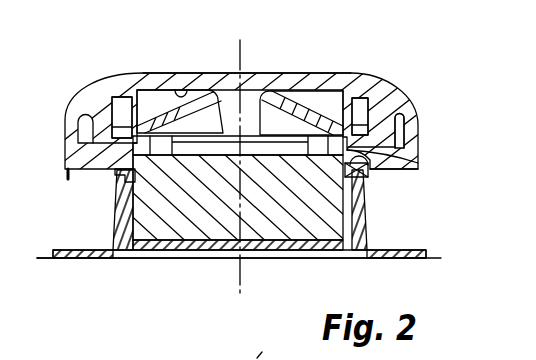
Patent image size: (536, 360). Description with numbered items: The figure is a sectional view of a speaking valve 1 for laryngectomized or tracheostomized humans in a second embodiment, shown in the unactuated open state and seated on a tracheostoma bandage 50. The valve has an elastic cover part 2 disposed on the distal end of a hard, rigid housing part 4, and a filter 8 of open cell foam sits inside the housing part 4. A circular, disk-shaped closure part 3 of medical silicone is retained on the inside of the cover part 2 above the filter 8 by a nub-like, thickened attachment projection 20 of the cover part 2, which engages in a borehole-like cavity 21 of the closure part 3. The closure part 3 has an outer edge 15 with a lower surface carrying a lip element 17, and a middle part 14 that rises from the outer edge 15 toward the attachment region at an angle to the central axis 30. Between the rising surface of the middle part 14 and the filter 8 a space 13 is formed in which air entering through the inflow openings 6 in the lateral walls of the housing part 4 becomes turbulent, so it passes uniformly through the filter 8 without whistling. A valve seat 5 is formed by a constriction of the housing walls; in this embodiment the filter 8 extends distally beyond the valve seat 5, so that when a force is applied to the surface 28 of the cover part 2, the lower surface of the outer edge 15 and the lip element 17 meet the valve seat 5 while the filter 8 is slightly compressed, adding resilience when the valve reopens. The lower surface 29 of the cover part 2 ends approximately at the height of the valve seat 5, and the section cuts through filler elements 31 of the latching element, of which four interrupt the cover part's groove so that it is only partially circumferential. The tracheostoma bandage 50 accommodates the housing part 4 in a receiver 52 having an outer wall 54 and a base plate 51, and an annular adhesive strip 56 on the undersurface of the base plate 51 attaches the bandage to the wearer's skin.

The speaking valve 1 is at (461, 69).
The cover part 2 is at (89, 84).
The closure part 3 is at (302, 95).
The housing part 4 is at (378, 111).
The valve seat 5 is at (370, 161).
The inflow openings 6 is at (120, 157).
The filter 8 is at (165, 225).
The space 13 is at (210, 134).
The middle part 14 is at (319, 117).
The outer edge 15 is at (127, 105).
The lip element 17 is at (418, 169).
The attachment projection 20 is at (238, 92).
The cavity 21 is at (174, 91).
The surface 28 is at (161, 71).
The lower surface 29 is at (68, 172).
The central axis 30 is at (245, 43).
The filler elements 31 is at (393, 136).
The tracheostoma bandage 50 is at (67, 253).
The base plate 51 is at (411, 250).
The receiver 52 is at (366, 218).
The outer wall 54 is at (109, 229).
The adhesive strip 56 is at (428, 258).